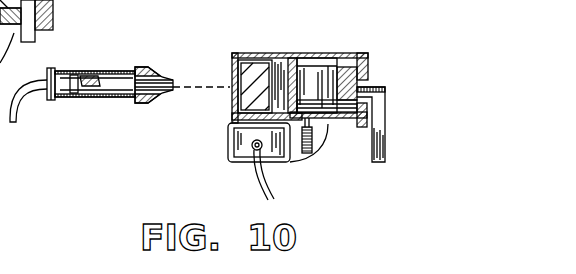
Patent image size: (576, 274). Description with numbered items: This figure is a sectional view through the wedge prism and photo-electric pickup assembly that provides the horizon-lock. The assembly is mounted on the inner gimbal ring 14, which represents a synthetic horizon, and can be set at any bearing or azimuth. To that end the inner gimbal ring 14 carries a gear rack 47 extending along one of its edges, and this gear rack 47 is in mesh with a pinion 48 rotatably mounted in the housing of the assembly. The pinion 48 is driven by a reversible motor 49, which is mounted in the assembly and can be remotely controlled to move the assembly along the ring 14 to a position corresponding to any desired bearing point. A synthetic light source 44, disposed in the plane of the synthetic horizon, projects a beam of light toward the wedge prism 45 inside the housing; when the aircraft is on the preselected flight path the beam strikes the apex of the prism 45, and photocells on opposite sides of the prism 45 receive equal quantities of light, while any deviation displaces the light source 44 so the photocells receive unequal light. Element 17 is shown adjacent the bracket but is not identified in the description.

The inner gimbal ring 14 is at (368, 67).
The mounting leg 17 is at (383, 148).
The synthetic light source 44 is at (97, 72).
The wedge prism 45 is at (240, 60).
The gear rack 47 is at (383, 97).
The pinion 48 is at (318, 124).
The reversible motor 49 is at (230, 160).